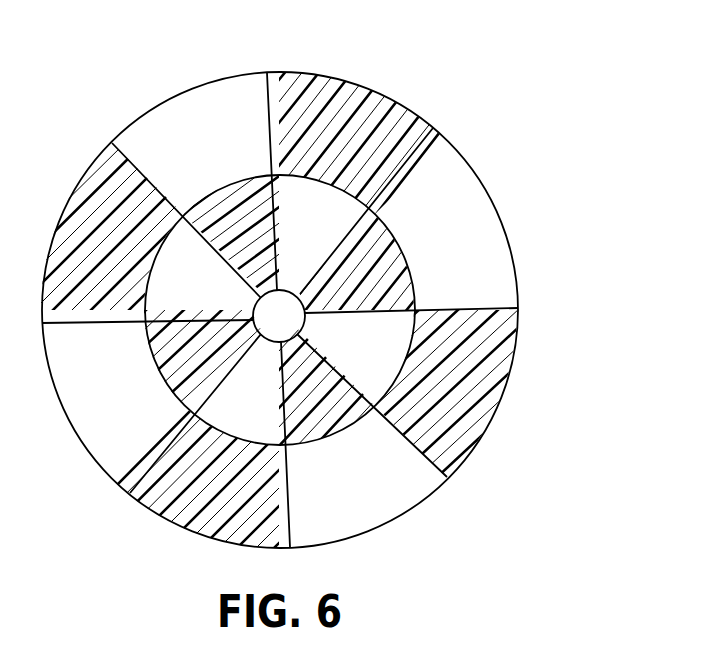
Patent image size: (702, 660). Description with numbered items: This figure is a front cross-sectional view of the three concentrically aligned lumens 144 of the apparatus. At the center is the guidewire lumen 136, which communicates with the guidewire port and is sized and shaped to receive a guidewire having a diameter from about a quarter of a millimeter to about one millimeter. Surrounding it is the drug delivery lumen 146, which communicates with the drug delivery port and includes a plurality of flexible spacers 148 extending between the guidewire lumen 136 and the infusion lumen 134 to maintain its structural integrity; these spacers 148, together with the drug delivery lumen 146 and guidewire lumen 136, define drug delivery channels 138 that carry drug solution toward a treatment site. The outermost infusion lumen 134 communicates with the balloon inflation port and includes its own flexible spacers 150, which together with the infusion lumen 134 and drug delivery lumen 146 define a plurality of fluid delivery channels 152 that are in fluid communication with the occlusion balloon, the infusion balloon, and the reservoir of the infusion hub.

The infusion lumen 134 is at (189, 108).
The guidewire lumen 136 is at (283, 323).
The drug delivery channel 138 is at (195, 283).
The three concentrically aligned lumens 144 is at (504, 134).
The drug delivery lumen 146 is at (293, 205).
The flexible spacers 148 is at (390, 270).
The flexible spacers 150 is at (310, 80).
The fluid delivery channels 152 is at (373, 477).